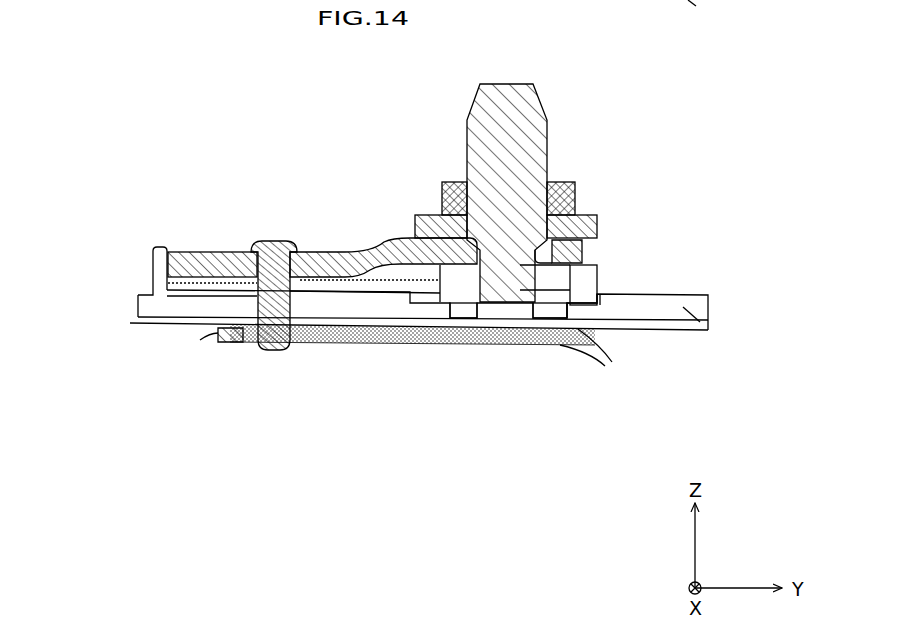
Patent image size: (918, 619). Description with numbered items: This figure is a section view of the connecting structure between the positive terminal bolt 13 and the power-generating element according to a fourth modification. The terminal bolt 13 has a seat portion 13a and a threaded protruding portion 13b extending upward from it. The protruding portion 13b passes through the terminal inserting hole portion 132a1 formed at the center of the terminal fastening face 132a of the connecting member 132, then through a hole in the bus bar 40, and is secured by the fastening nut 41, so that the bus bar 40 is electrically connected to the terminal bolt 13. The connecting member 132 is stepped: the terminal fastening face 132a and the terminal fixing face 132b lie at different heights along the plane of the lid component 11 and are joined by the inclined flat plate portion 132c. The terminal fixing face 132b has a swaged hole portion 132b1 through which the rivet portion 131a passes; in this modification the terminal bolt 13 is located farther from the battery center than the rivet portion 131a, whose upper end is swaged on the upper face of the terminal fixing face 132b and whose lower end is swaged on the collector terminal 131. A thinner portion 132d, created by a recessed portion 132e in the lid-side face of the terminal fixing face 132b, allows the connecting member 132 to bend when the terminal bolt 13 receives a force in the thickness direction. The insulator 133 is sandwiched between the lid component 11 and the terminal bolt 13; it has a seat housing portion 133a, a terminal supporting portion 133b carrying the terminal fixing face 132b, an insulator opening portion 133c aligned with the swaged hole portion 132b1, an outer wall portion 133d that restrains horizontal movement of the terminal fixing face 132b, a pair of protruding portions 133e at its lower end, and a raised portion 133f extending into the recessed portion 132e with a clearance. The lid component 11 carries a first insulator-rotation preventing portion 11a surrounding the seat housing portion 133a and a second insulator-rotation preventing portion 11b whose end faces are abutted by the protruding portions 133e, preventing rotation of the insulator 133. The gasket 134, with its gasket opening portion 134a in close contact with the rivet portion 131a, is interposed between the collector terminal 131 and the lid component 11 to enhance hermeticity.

The lid component 11 is at (713, 332).
The first insulator-rotation preventing portion 11a is at (585, 303).
The second insulator-rotation preventing portion 11b is at (504, 332).
The terminal bolt (positive electrode) 13 is at (452, 160).
The seat portion 13a is at (420, 217).
The protruding portion 13b is at (485, 158).
The bus bar 40 is at (597, 230).
The fastening nut 41 is at (577, 184).
The collector terminal (positive electrode) 131 is at (235, 345).
The rivet portion 131a is at (282, 352).
The connecting member (positive electrode) 132 is at (352, 248).
The terminal fastening face 132a is at (582, 257).
The terminal inserting hole portion 132a1 is at (600, 304).
The terminal fixing face 132b is at (188, 252).
The swaged hole portion 132b1 is at (242, 246).
The inclined flat plate portion 132c is at (353, 246).
The thinner portion 132d is at (328, 262).
The recessed portion 132e is at (348, 300).
The insulator 133 is at (142, 268).
The seat housing portion 133a is at (603, 290).
The terminal supporting portion 133b is at (225, 283).
The insulator opening portion 133c is at (255, 303).
The outer wall portion 133d is at (152, 262).
The protruding portions 133e is at (455, 318).
The raised portion 133f is at (363, 325).
The gasket (second gasket) 134 is at (407, 322).
The gasket opening portion 134a is at (230, 334).